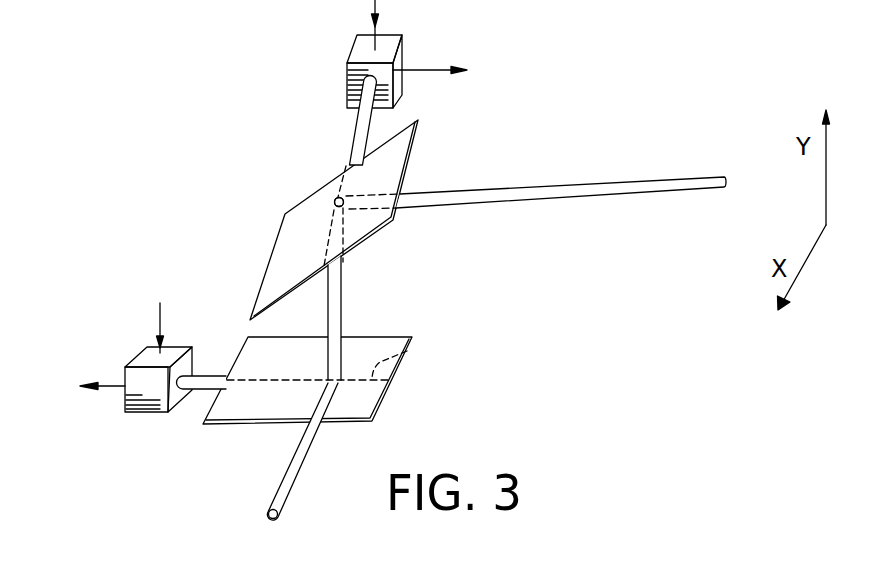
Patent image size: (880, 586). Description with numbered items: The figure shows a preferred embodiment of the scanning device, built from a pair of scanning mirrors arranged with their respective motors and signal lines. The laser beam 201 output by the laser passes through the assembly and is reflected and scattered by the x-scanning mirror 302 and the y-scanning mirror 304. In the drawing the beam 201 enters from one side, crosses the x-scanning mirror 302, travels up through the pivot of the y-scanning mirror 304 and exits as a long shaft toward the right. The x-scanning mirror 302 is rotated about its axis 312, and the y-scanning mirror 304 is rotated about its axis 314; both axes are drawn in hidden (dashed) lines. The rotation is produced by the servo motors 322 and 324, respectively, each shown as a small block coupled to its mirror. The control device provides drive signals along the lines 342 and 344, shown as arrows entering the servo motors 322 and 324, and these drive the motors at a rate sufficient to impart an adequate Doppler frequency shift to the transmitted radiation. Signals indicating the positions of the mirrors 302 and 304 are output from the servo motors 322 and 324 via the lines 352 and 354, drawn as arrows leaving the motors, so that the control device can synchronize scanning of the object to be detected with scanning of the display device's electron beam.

The laser beam 201 is at (652, 178).
The x-scanning mirror 302 is at (382, 403).
The y-scanning mirror 304 is at (384, 229).
The axis 312 is at (417, 350).
The axis 314 is at (340, 188).
The servo motor 322 is at (150, 413).
The servo motor 324 is at (347, 87).
The line 342 is at (177, 303).
The line 344 is at (377, 3).
The line 352 is at (85, 386).
The line 354 is at (433, 72).